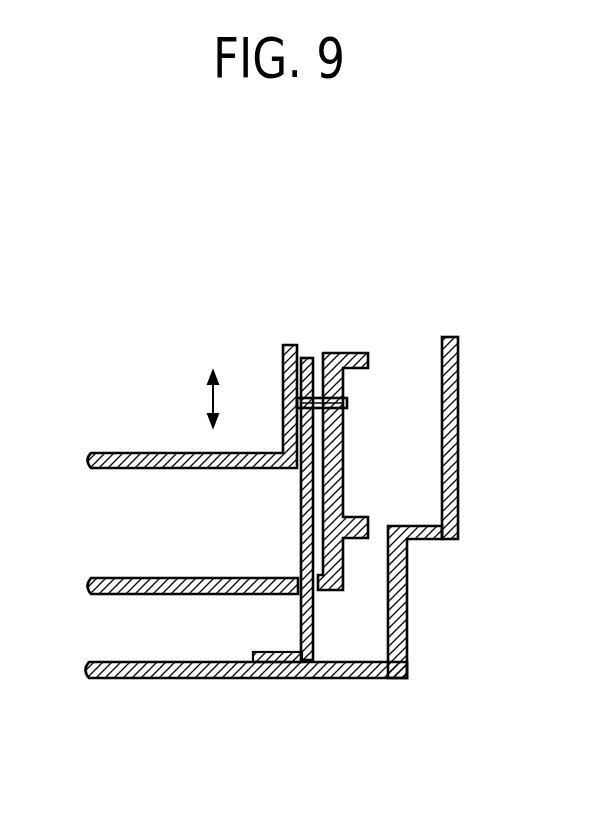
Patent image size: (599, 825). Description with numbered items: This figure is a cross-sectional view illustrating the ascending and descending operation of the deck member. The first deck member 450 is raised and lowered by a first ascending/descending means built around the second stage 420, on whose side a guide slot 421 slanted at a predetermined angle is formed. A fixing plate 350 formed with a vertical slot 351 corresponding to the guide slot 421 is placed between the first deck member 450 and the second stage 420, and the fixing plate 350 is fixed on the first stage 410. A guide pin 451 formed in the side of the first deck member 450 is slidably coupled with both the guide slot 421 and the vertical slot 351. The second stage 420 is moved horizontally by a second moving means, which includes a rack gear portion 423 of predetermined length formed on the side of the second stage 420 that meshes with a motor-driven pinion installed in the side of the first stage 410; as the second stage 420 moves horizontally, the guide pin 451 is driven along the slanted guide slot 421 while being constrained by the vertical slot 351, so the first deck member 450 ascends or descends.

The fixing plate 350 is at (322, 527).
The vertical slot 351 is at (307, 465).
The first stage 410 is at (458, 442).
The second stage 420 is at (93, 598).
The guide slot 421 is at (348, 406).
The rack gear portion 423 is at (370, 515).
The first deck member 450 is at (100, 457).
The guide pin 451 is at (348, 400).